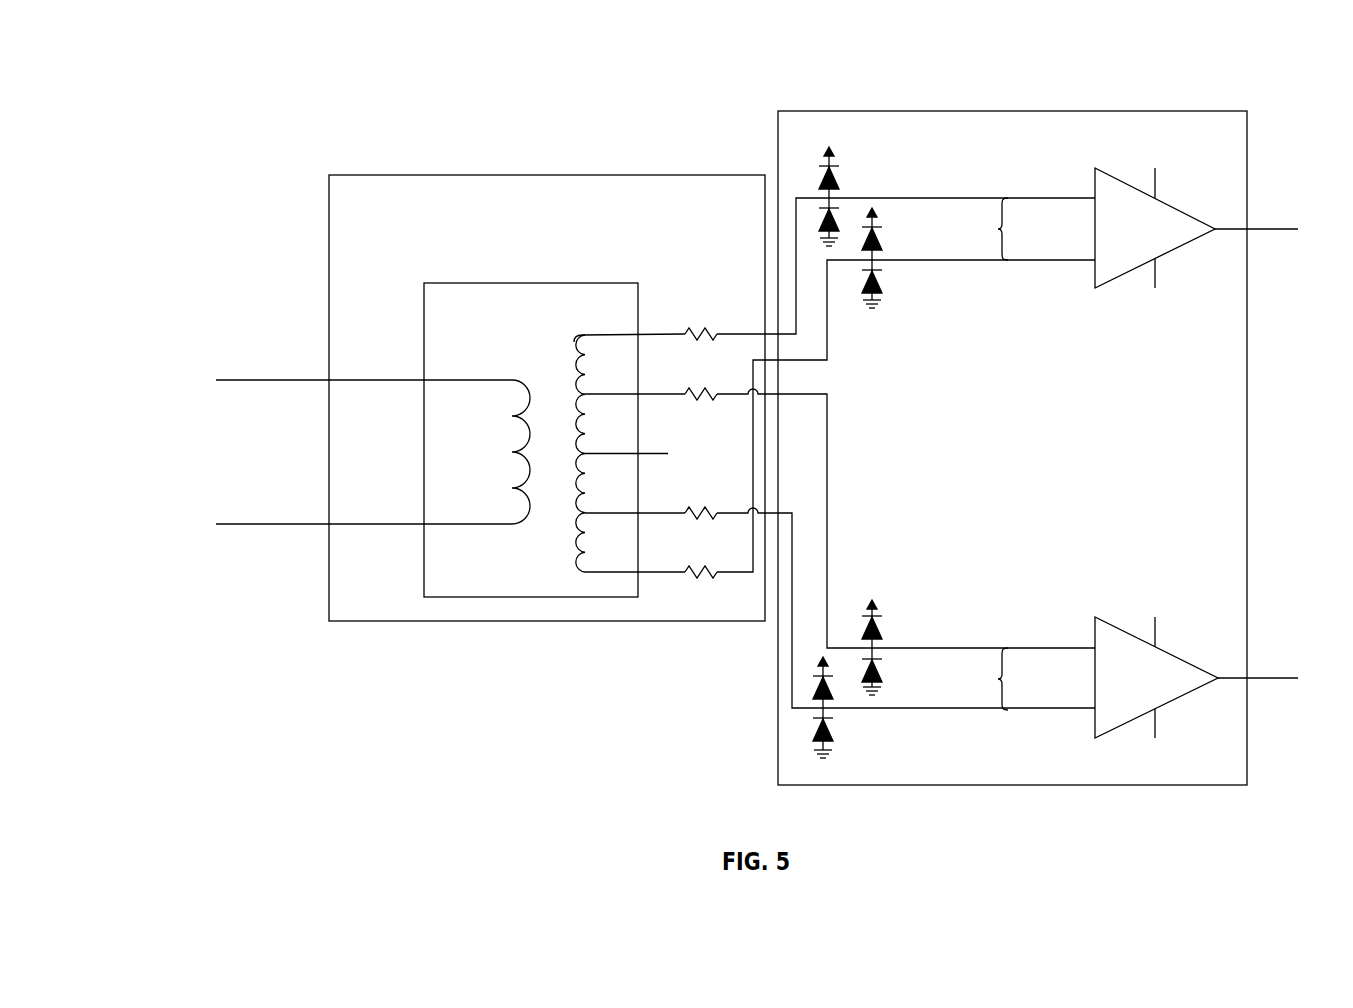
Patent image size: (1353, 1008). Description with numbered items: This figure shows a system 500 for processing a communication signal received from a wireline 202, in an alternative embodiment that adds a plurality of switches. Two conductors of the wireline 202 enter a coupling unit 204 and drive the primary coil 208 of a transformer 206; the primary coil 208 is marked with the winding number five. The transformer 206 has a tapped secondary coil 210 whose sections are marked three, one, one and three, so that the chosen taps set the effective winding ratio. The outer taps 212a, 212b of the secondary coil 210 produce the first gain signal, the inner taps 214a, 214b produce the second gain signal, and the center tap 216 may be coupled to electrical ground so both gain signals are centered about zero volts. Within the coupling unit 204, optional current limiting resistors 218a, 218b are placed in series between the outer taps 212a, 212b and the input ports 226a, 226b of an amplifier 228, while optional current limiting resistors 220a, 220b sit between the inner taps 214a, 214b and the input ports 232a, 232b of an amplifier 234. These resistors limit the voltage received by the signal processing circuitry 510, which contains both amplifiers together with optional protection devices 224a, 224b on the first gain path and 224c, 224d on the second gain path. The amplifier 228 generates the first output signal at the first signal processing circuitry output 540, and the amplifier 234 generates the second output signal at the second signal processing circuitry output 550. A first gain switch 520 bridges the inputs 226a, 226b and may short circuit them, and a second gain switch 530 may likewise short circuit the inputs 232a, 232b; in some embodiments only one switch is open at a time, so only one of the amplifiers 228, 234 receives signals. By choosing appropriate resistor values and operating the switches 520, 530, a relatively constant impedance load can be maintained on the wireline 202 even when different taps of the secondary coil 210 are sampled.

The system 500 is at (170, 84).
The wireline 202 is at (320, 380).
The coupling unit 204 is at (570, 236).
The transformer 206 is at (512, 283).
The primary coil 208 is at (512, 430).
The secondary coil 210 is at (566, 352).
The tap 212a is at (620, 334).
The tap 212b is at (598, 572).
The tap 214a is at (620, 394).
The tap 214b is at (621, 513).
The center tap 216 is at (645, 456).
The current limiting resistor 218a is at (722, 334).
The current limiting resistor 218b is at (722, 574).
The current limiting resistor 220a is at (722, 396).
The current limiting resistor 220b is at (732, 496).
The protection device 224a is at (840, 182).
The protection device 224b is at (884, 290).
The protection device 224c is at (884, 634).
The protection device 224d is at (834, 742).
The input port 226a is at (1094, 198).
The input port 226b is at (1094, 260).
The amplifier 228 is at (1104, 288).
The input port 232a is at (1094, 648).
The input port 232b is at (1094, 710).
The amplifier 234 is at (1108, 738).
The signal processing circuitry 510 is at (1147, 488).
The first gain switch 520 is at (998, 238).
The second gain switch 530 is at (998, 688).
The first signal processing circuitry output 540 is at (1286, 230).
The second signal processing circuitry output 550 is at (1286, 679).